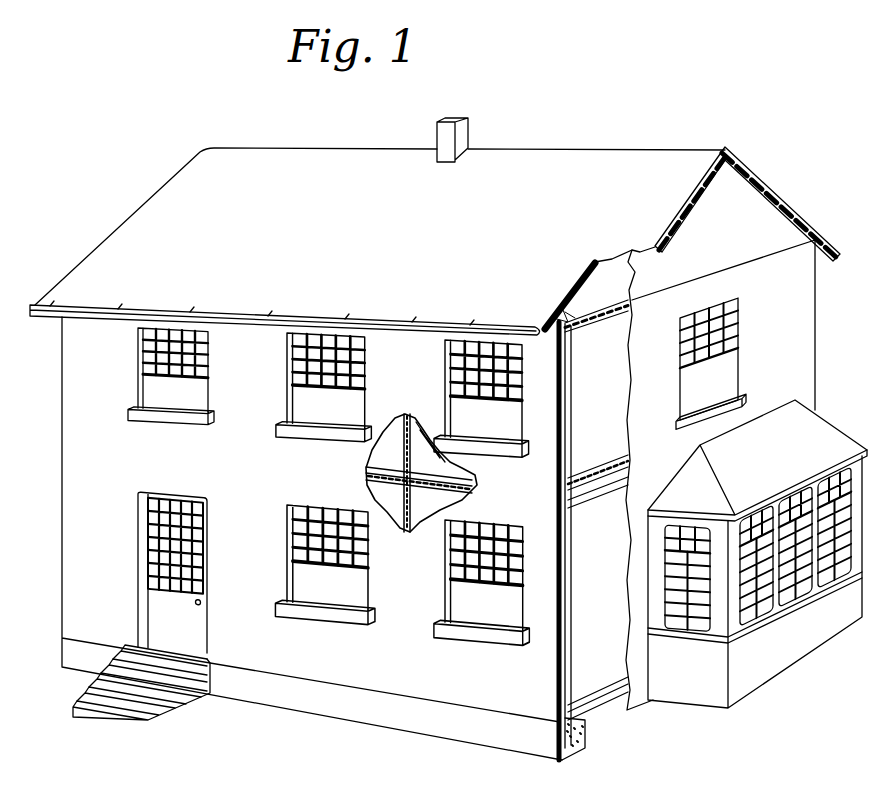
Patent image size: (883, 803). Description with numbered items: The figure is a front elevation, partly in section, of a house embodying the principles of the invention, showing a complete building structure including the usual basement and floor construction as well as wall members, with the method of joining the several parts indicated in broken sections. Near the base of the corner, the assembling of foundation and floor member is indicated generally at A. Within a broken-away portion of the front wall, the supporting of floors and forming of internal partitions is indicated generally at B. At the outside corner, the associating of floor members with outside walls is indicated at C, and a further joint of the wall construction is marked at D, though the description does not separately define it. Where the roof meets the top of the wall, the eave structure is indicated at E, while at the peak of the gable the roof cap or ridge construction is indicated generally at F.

The assembling of foundation and floor member A is at (588, 722).
The supporting floors and forming internal partitions B is at (361, 477).
The associating floor members with outside walls C is at (556, 496).
The plate joint D is at (574, 337).
The eave structure E is at (556, 300).
The roof cap or ridge construction F is at (727, 149).